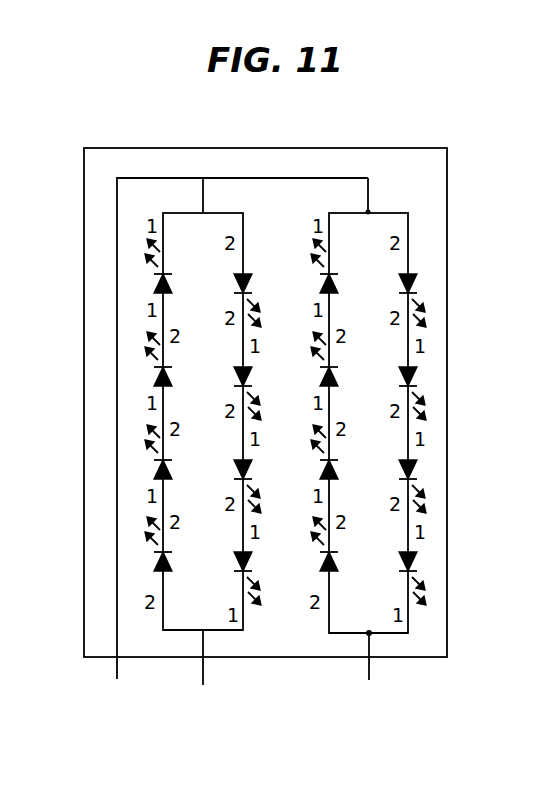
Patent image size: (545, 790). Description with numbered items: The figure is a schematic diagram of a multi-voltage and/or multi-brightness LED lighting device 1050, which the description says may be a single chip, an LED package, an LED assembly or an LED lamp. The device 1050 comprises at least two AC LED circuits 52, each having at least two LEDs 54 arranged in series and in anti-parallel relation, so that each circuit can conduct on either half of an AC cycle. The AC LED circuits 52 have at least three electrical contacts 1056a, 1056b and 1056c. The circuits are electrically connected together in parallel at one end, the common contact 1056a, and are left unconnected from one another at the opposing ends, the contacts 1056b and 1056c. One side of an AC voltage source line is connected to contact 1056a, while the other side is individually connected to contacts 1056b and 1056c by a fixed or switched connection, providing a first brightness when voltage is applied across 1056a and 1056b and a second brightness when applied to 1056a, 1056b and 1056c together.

The multi-voltage and/or multi-brightness LED lighting device 1050 is at (462, 214).
The electrical contact 1056a is at (203, 177).
The electrical contact 1056b is at (203, 687).
The electrical contact 1056c is at (373, 672).
The LED 54 is at (233, 281).
The LED string connection 52 is at (333, 638).